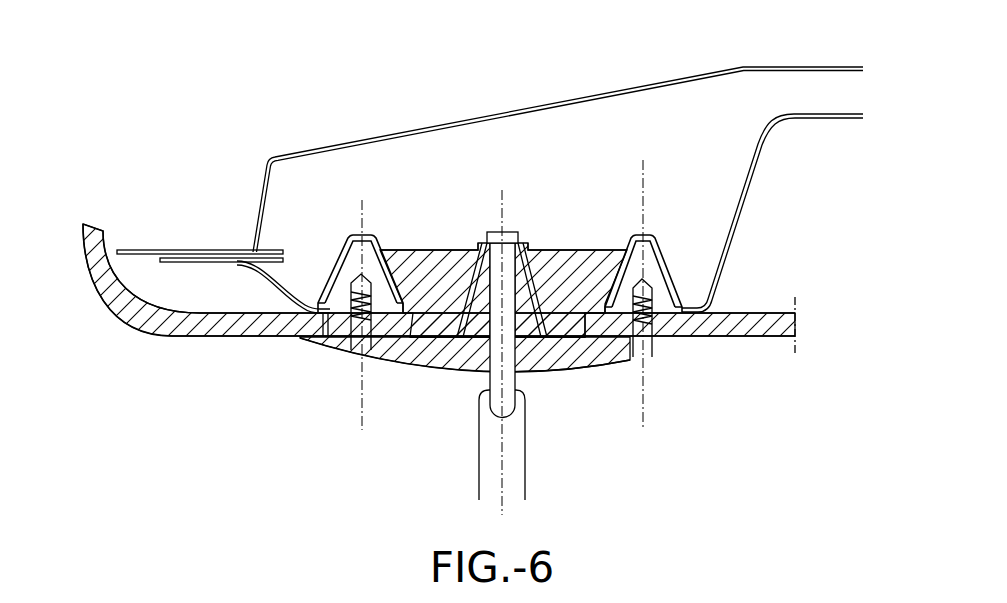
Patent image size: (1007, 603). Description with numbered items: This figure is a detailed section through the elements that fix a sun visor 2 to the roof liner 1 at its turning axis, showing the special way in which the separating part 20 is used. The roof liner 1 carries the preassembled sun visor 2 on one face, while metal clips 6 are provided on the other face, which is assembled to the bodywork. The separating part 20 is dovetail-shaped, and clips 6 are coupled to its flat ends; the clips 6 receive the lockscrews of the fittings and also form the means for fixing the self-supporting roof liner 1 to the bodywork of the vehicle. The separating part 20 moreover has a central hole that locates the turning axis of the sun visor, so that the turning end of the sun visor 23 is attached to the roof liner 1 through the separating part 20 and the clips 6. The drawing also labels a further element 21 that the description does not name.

The roof liner 1 is at (243, 323).
The sun visor 2 is at (513, 472).
The metal clip 6 is at (333, 267).
The separating part 20 is at (440, 253).
The clip 21 is at (395, 325).
The turning end of the sun visor 23 is at (447, 357).